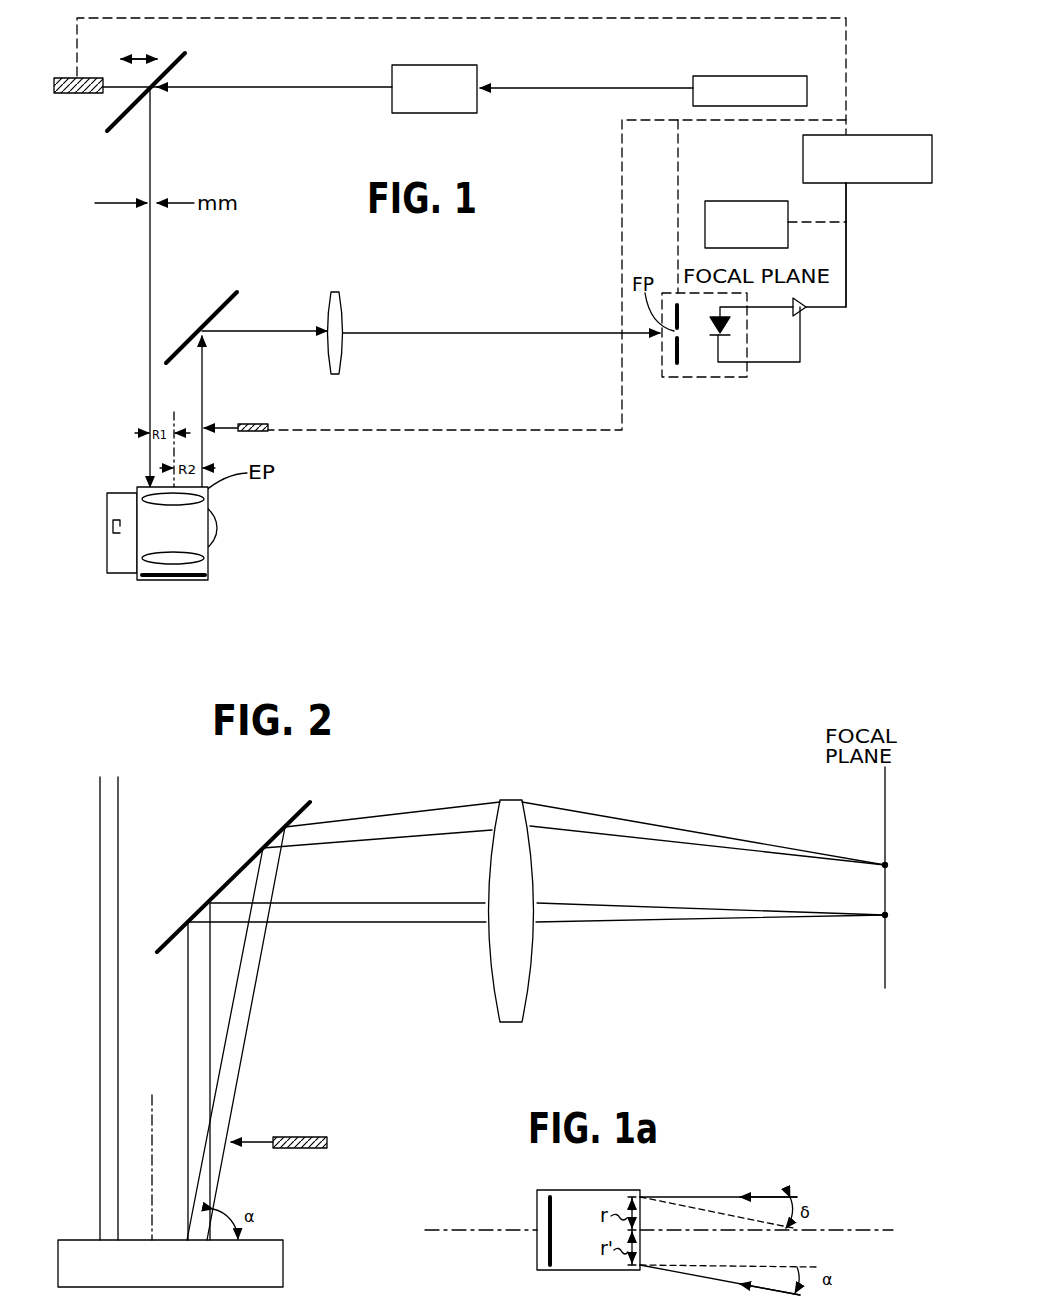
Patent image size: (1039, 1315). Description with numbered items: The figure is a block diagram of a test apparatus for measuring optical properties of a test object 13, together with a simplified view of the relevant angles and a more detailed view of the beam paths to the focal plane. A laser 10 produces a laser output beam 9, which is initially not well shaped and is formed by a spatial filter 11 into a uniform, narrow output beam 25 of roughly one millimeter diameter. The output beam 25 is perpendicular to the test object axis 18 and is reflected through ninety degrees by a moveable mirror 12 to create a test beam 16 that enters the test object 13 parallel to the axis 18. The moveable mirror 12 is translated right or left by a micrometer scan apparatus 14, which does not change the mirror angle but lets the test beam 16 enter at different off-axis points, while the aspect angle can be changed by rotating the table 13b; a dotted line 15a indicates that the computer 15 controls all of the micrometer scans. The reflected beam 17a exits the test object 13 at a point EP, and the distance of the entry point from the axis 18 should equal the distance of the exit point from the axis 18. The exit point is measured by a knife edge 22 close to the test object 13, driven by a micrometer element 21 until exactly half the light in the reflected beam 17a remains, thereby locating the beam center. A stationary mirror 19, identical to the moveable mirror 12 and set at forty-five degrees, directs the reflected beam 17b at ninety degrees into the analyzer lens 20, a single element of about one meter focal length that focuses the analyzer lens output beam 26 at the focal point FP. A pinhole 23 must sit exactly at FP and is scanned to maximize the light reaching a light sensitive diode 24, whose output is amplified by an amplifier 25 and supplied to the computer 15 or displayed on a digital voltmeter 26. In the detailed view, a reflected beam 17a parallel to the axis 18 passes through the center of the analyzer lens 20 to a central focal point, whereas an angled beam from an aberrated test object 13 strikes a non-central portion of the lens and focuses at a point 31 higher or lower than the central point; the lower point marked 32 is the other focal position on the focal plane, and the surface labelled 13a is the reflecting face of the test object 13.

In FIG. 1, the laser output beam 9 is at (550, 93).
In FIG. 1, the laser 10 is at (745, 73).
In FIG. 1, the spatial filter 11 is at (445, 64).
In FIG. 1, the moveable mirror 12 is at (186, 58).
In FIG. 1, the test object 13 is at (180, 521).
In FIG. 2, the test object 13 is at (284, 1259).
In FIG. 1a, the test object 13 is at (563, 1214).
In FIG. 1, the reflective surface of test object 13a is at (205, 575).
In FIG. 1a, the reflective surface of test object 13a is at (547, 1210).
In FIG. 1, the table 13b is at (216, 527).
In FIG. 1, the micrometer scan apparatus 14 is at (58, 78).
In FIG. 1, the computer 15 is at (878, 134).
In FIG. 1, the dotted line 15a is at (535, 20).
In FIG. 1, the test beam 16 is at (150, 446).
In FIG. 2, the test beam 16 is at (100, 843).
In FIG. 1, the reflected beam 17a is at (203, 395).
In FIG. 2, the reflected beam 17a is at (189, 990).
In FIG. 1, the reflected beam 17b is at (252, 328).
In FIG. 1, the test object axis 18 is at (173, 423).
In FIG. 2, the test object axis 18 is at (152, 1118).
In FIG. 1a, the test object axis 18 is at (498, 1232).
In FIG. 1, the stationary mirror 19 is at (234, 296).
In FIG. 2, the stationary mirror 19 is at (308, 804).
In FIG. 1, the analyzer lens 20 is at (338, 370).
In FIG. 2, the analyzer lens 20 is at (490, 1010).
In FIG. 1, the micrometer element 21 is at (257, 419).
In FIG. 2, the micrometer element 21 is at (322, 1136).
In FIG. 1, the knife edge 22 is at (207, 431).
In FIG. 2, the knife edge 22 is at (235, 1136).
In FIG. 1, the pinhole 23 is at (675, 339).
In FIG. 1, the light sensitive diode 24 is at (707, 327).
In FIG. 1, the output beam / amplifier 25 is at (330, 91).
In FIG. 1, the analyzer lens output beam / digital voltmeter 26 is at (748, 199).
In FIG. 2, the analyzer lens output beam / digital voltmeter 26 is at (703, 862).
In FIG. 2, the focal point 31 is at (883, 863).
In FIG. 2, the focal point of second beam 32 is at (883, 918).